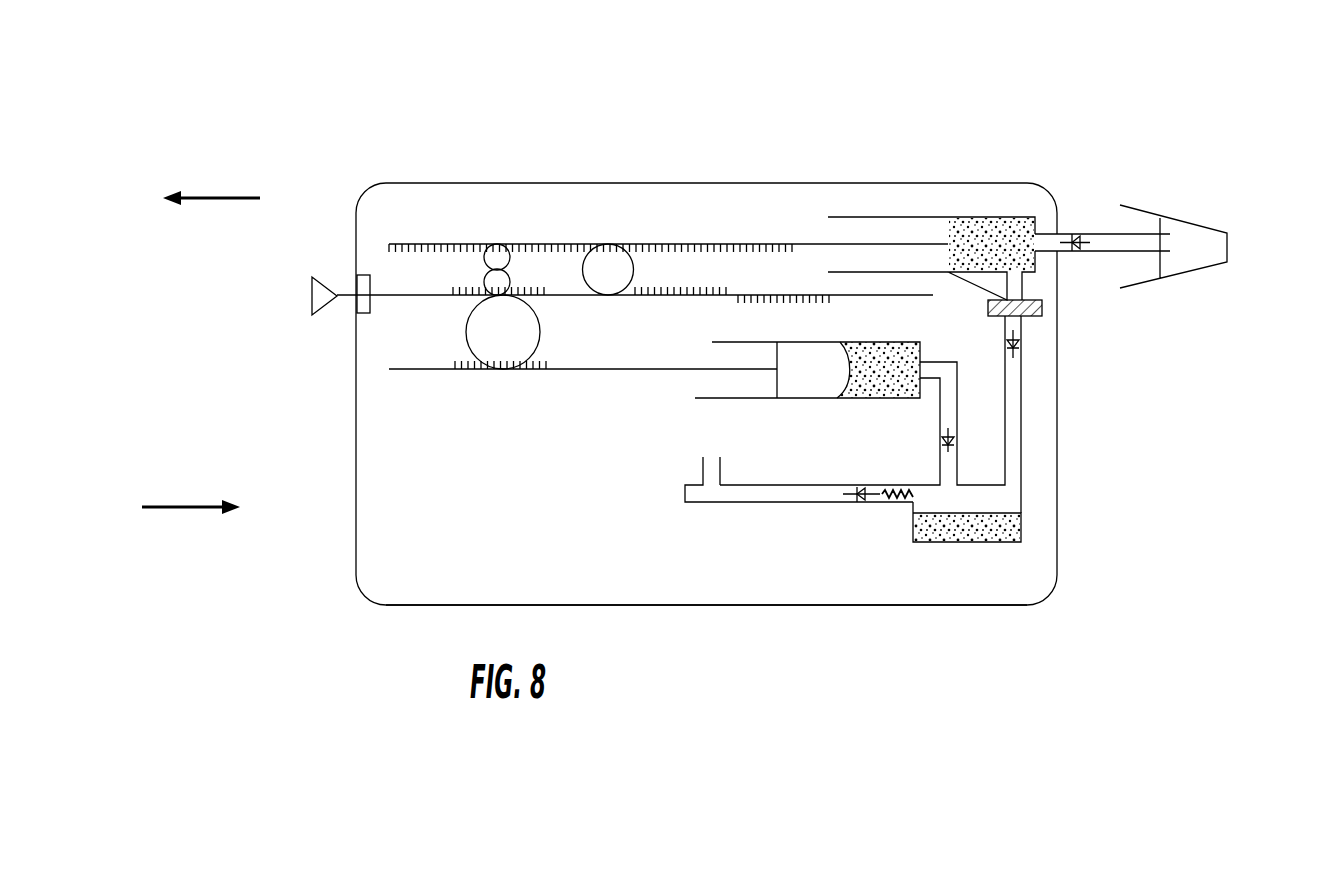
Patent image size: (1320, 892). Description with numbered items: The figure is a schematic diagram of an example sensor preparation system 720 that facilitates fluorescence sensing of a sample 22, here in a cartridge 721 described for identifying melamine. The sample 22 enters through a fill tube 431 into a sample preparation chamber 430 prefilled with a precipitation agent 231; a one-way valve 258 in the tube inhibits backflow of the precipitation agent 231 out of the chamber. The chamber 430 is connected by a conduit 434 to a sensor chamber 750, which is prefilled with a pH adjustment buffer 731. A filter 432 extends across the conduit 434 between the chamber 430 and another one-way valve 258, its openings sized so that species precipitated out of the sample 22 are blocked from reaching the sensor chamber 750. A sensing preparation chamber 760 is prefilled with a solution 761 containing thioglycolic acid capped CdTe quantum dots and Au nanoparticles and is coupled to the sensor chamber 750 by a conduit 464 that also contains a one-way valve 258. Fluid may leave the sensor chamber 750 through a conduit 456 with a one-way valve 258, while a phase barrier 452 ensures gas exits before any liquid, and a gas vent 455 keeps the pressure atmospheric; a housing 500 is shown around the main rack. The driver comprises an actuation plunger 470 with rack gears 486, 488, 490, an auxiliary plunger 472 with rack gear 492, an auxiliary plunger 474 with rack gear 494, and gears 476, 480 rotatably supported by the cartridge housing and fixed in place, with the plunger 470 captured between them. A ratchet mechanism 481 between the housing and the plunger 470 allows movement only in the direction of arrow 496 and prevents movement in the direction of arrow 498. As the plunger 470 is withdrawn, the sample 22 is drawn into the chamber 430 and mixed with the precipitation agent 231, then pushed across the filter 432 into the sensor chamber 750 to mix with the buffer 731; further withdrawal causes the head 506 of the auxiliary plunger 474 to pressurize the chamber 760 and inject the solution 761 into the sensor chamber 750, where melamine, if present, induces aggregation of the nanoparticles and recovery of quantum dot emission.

The sensor preparation system 720 is at (390, 116).
The cartridge 721 is at (993, 606).
The arrow 496 is at (220, 197).
The arrow 498 is at (172, 508).
The actuation plunger 470 is at (313, 282).
The ratchet mechanism 481 is at (362, 275).
The auxiliary plunger 472 is at (402, 243).
The rack gear 488 is at (687, 288).
The rack gear 490 is at (758, 298).
The auxiliary plunger 474 is at (398, 372).
The rack gear 494 is at (457, 365).
The rack gear 486 is at (546, 288).
The gear 476 is at (640, 247).
The rack gear 492 is at (673, 258).
The gear 480 is at (535, 332).
The housing 500 is at (950, 235).
The sample preparation chamber 430 is at (988, 233).
The precipitation agent 231 is at (1022, 230).
The one-way valve 258 is at (1073, 240).
The filter 432 is at (1208, 243).
The fill tube 431 is at (1117, 236).
The sample 22 is at (1167, 245).
The conduit 434 is at (1022, 413).
The conduit 464 is at (958, 401).
The sensing preparation chamber 760 is at (803, 398).
The solution 761 is at (882, 353).
The head 506 is at (777, 383).
The gas vent 455 is at (703, 468).
The conduit 456 is at (720, 478).
The phase barrier 452 is at (897, 502).
The sensor chamber 750 is at (1022, 542).
The pH adjustment buffer 731 is at (958, 530).